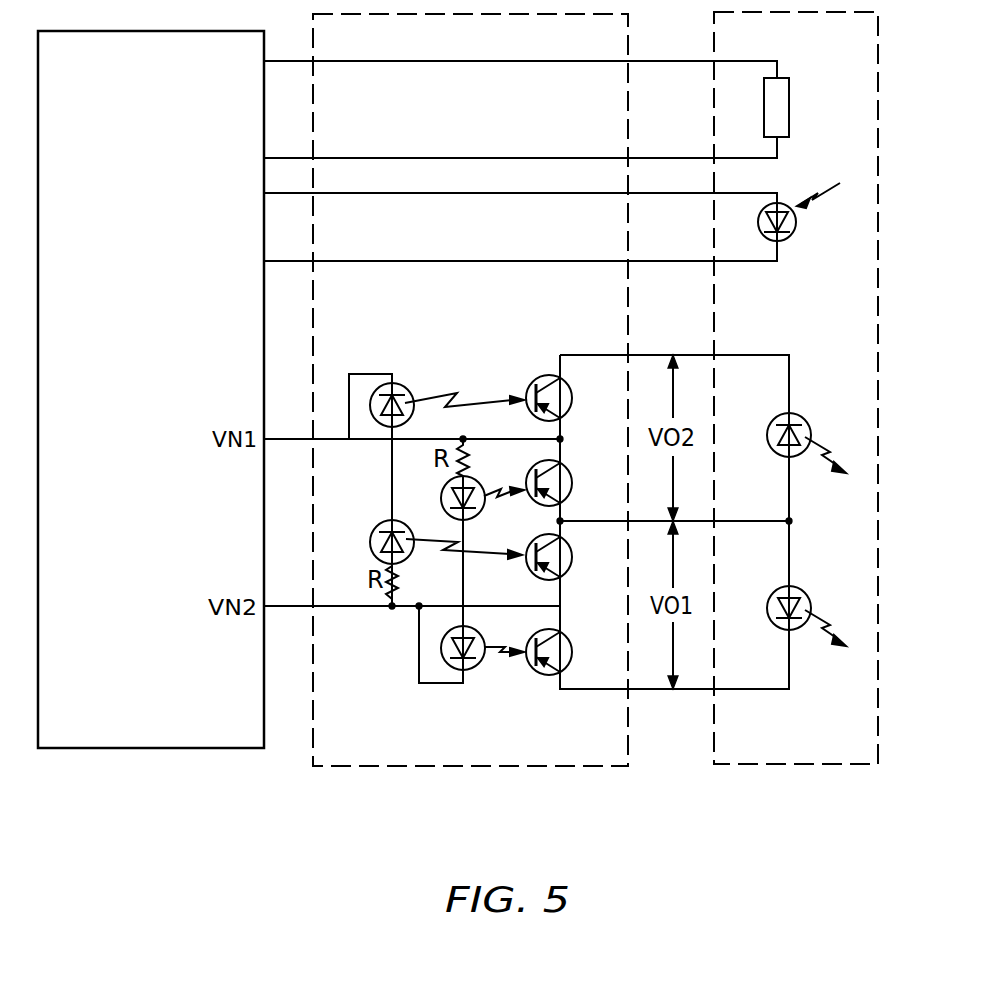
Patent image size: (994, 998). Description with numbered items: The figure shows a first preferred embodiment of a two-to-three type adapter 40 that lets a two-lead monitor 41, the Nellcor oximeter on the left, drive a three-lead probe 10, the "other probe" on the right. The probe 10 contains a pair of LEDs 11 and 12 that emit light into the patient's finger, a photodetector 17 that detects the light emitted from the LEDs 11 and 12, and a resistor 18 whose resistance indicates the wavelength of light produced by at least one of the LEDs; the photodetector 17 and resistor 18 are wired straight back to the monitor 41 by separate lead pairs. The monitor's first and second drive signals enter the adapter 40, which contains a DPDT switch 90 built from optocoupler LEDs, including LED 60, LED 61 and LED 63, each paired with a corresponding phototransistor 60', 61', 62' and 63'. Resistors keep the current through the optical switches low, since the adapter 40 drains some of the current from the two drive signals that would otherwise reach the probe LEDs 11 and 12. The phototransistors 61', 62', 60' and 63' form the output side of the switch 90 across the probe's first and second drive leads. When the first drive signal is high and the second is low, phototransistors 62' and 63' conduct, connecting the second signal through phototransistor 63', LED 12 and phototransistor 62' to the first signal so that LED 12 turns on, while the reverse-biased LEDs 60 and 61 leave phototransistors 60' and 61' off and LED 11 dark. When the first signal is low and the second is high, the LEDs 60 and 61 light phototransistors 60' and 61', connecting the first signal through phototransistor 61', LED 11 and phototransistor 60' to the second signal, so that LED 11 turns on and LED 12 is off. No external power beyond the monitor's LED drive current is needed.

The 3-lead probe 10 is at (818, 765).
The LED 11 is at (805, 412).
The LED 12 is at (800, 593).
The photodetector 17 is at (797, 228).
The resistor 18 is at (789, 103).
The 2-to-3 Type Adapter 40 is at (538, 767).
The 2-lead monitor 41 is at (185, 749).
The LED 60 is at (429, 525).
The phototransistor 60' is at (572, 555).
The LED 61 is at (447, 391).
The phototransistor 61' is at (572, 391).
The phototransistor 62' is at (551, 477).
The LED 63 is at (447, 648).
The phototransistor 63' is at (572, 647).
The DPDT switch 90 is at (322, 545).